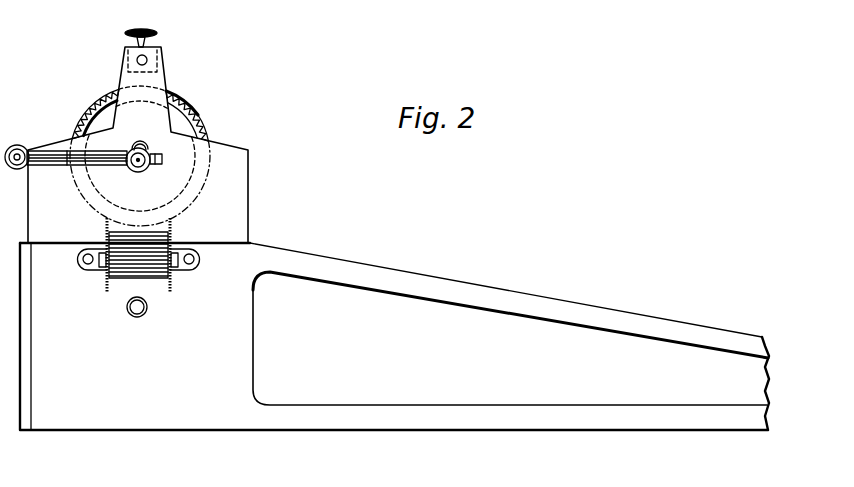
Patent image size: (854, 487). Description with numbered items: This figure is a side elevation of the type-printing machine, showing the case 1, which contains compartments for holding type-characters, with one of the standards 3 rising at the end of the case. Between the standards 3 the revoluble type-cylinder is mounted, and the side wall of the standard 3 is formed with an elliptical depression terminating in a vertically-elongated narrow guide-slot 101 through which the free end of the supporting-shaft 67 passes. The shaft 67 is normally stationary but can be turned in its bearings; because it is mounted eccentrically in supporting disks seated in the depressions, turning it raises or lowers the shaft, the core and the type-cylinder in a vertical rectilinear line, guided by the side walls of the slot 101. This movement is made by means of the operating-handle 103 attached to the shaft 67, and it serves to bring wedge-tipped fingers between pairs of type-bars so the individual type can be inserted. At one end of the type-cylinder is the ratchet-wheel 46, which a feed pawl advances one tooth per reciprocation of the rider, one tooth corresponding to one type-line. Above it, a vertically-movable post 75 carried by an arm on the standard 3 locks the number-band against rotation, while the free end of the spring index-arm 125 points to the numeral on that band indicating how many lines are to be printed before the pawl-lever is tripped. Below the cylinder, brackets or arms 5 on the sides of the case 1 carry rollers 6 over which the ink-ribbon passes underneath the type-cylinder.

The case 1 is at (421, 253).
The standard 3 is at (249, 206).
The bracket or arm 5 is at (185, 273).
The roller 6 is at (108, 285).
The ratchet-wheel 46 is at (88, 114).
The supporting-shaft 67 is at (136, 168).
The vertically-movable post 75 is at (146, 31).
The guide-slot 101 is at (144, 146).
The operating-handle 103 is at (53, 167).
The spring index-arm 125 is at (186, 97).